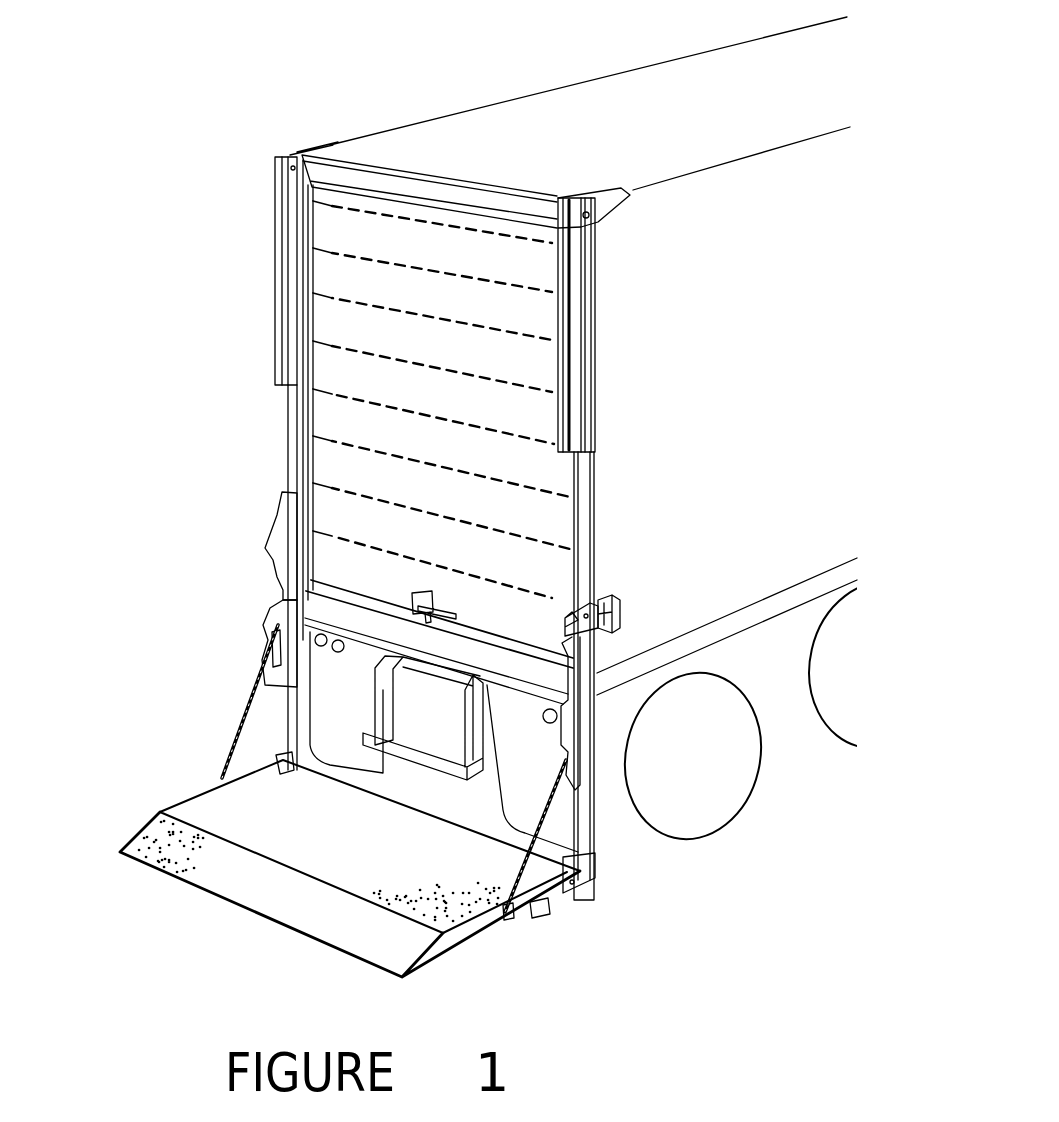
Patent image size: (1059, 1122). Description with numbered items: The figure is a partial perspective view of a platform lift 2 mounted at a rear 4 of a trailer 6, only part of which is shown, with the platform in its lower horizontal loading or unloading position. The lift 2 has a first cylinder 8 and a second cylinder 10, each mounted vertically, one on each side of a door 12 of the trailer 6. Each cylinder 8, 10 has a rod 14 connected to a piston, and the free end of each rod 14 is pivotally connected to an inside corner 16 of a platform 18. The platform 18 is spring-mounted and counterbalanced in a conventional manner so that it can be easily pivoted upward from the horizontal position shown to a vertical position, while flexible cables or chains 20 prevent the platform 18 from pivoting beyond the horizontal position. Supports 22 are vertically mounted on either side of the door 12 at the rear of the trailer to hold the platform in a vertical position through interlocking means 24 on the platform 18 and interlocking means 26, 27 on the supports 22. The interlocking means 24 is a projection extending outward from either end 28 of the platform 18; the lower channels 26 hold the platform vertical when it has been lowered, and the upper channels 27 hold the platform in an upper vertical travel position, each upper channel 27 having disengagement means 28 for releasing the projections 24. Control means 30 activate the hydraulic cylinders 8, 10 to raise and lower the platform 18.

The platform lift 2 is at (110, 617).
The rear 4 is at (598, 525).
The trailer 6 is at (652, 78).
The first cylinder 8 is at (292, 295).
The second cylinder 10 is at (576, 355).
The door 12 is at (335, 237).
The rod 14 is at (287, 407).
The inside corner 16 is at (280, 762).
The platform 18 is at (237, 887).
The flexible cables or chains 20 is at (250, 710).
The supports 22 is at (275, 598).
The interlocking means 24 is at (547, 912).
The lower channels 26 is at (580, 770).
The upper channels 27 is at (273, 548).
The end 28 is at (178, 797).
The control means 30 is at (615, 592).